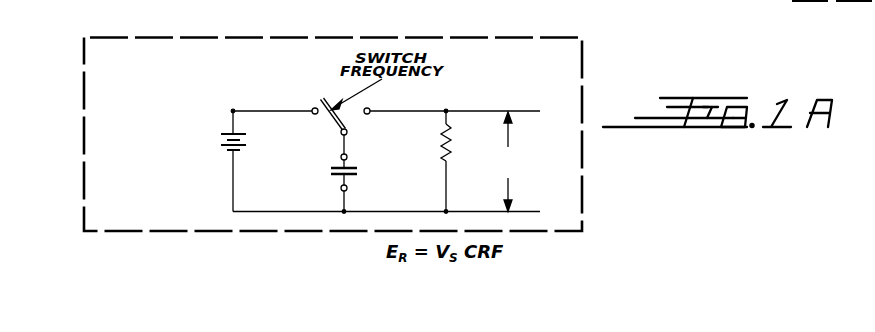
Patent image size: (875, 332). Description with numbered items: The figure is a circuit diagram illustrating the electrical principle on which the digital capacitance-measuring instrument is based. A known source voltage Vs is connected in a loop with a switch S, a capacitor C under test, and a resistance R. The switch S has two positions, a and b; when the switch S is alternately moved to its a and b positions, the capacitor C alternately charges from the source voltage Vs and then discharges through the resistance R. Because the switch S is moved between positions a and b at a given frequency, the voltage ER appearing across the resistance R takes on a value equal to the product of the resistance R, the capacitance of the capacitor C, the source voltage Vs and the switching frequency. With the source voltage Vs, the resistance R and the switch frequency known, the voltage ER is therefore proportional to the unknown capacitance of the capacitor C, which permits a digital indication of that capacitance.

The source voltage Vs is at (220, 147).
The switch S is at (350, 94).
The switch position a is at (311, 108).
The switch position b is at (374, 108).
The capacitor C is at (358, 167).
The resistor R is at (452, 146).
The voltage across the resistance ER is at (514, 162).